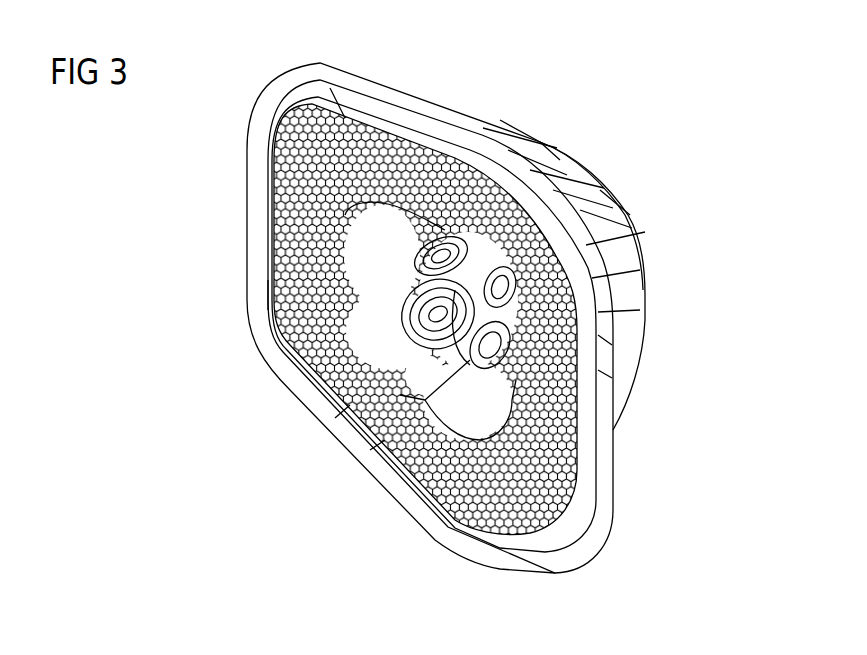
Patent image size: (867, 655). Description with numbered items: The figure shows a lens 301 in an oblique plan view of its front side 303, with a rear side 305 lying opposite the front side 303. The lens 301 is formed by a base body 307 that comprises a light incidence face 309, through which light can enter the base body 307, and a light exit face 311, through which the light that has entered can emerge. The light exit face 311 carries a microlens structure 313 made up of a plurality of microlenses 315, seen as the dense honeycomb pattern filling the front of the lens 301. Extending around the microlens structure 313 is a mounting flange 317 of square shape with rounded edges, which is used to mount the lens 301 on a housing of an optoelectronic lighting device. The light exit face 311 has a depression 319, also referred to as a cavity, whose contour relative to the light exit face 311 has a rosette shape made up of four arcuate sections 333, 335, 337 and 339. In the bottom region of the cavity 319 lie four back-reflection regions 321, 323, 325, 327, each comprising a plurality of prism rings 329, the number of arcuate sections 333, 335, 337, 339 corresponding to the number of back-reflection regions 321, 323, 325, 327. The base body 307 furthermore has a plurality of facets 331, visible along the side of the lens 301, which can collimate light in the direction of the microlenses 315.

The lens 301 is at (672, 468).
The front side 303 is at (513, 548).
The rear side 305 is at (640, 228).
The base body 307 is at (600, 340).
The light incidence face 309 is at (538, 143).
The light exit face 311 is at (335, 416).
The microlens structure 313 is at (282, 295).
The microlenses 315 is at (302, 108).
The mounting flange 317 is at (600, 503).
The depression 319 is at (390, 225).
The back-reflection region 321 is at (427, 375).
The back-reflection region 323 is at (497, 437).
The back-reflection region 325 is at (510, 290).
The back-reflection region 327 is at (460, 240).
The prism rings 329 is at (440, 240).
The facets 331 is at (503, 128).
The arcuate section 333 is at (340, 100).
The arcuate section 335 is at (620, 200).
The arcuate section 337 is at (492, 392).
The arcuate section 339 is at (372, 450).